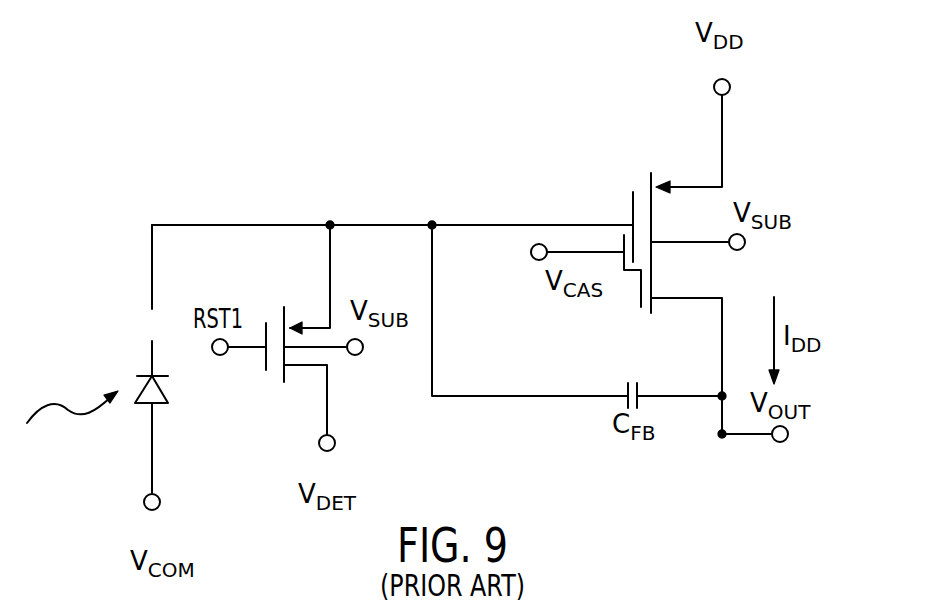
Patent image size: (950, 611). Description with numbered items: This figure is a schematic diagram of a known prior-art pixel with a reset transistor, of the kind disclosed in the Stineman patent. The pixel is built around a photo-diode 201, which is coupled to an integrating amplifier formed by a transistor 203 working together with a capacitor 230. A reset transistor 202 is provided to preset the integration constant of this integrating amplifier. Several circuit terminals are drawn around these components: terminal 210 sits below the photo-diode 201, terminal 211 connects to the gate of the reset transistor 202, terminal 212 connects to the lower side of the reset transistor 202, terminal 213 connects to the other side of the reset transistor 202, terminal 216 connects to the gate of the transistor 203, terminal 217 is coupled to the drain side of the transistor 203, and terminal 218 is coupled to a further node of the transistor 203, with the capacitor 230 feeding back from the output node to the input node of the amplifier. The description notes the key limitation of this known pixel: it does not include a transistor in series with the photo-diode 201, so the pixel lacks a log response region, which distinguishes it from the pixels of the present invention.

The photo-diode 201 is at (157, 405).
The reset transistor 202 is at (268, 322).
The integrating amplifier transistor 203 is at (645, 190).
The common voltage terminal VCOM 210 is at (152, 510).
The reset signal terminal RST1 211 is at (220, 355).
The detection voltage terminal VDET 212 is at (327, 451).
The substrate voltage terminal VSUB 213 is at (355, 355).
The cascode voltage terminal VCAS 216 is at (539, 261).
The supply voltage terminal VDD 217 is at (720, 78).
The substrate voltage terminal VSUB 218 is at (739, 250).
The integrating amplifier capacitor 230 is at (633, 383).